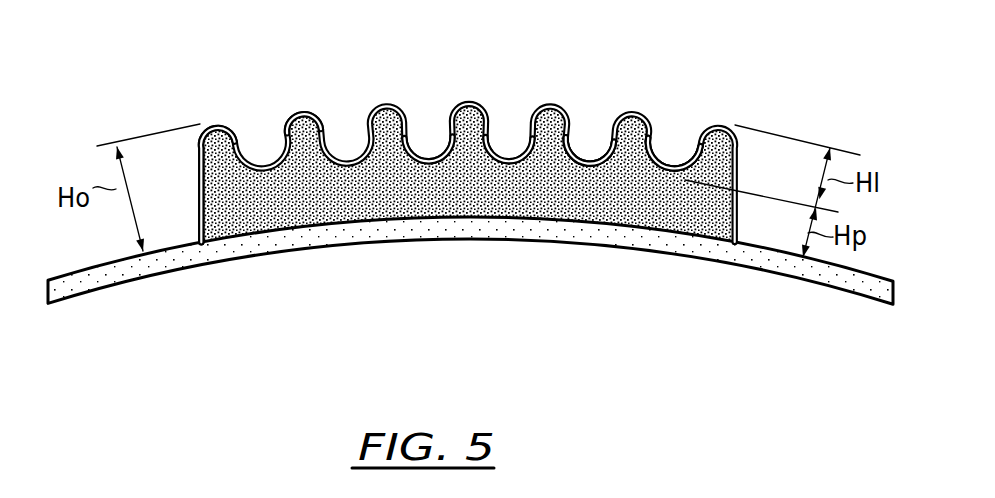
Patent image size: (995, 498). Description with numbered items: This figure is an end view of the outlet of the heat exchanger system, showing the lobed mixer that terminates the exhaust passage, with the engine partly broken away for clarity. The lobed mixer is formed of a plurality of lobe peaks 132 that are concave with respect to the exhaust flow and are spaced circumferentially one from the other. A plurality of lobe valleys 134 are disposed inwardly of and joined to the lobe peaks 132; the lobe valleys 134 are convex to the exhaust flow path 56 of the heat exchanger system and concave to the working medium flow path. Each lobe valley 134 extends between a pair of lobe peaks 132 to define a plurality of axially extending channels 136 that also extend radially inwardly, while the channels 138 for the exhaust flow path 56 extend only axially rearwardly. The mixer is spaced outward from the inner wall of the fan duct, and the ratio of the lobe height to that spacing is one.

The exhaust flow path 56 is at (290, 200).
The lobe peaks 132 is at (642, 68).
The lobe valleys 134 is at (502, 164).
The axially extending channels 136 is at (593, 133).
The channels for the exhaust flow path 138 is at (215, 140).